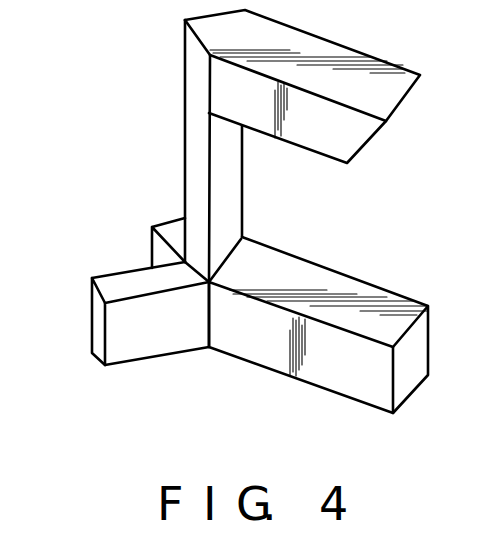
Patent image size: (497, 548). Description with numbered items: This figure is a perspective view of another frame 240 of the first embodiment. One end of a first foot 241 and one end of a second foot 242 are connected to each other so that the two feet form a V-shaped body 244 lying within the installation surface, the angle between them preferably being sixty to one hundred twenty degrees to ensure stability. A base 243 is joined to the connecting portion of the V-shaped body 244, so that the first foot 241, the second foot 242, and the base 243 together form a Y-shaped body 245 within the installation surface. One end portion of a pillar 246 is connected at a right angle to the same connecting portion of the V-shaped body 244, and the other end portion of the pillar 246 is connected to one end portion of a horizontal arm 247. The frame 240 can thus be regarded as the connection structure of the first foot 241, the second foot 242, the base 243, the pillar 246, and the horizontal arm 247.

The frame 240 is at (227, 229).
The first foot 241 is at (157, 348).
The second foot 242 is at (162, 250).
The base 243 is at (318, 372).
The V-shaped body 244 is at (112, 273).
The Y-shaped body 245 is at (253, 364).
The pillar 246 is at (237, 198).
The horizontal arm 247 is at (318, 145).